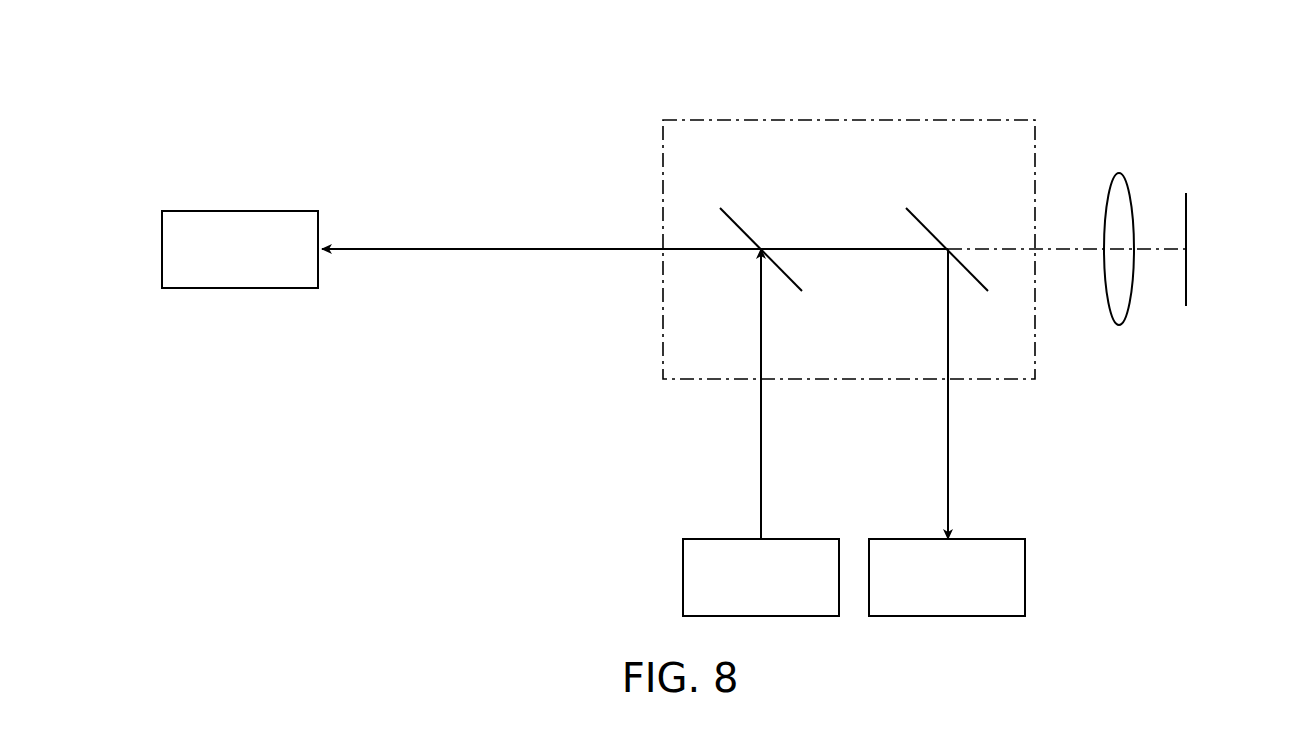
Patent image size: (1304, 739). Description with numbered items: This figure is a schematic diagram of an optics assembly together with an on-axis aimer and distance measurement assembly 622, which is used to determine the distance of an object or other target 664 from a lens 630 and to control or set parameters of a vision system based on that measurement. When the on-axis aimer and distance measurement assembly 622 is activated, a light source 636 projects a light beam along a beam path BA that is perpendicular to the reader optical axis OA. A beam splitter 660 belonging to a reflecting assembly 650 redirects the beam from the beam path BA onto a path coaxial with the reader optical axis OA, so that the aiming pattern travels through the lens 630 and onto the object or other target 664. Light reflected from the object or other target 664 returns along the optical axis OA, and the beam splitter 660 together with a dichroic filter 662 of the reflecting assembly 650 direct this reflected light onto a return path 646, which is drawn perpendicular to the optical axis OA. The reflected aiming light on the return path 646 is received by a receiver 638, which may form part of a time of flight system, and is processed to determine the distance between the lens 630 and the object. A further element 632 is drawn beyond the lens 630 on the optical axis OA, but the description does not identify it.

The on-axis aimer and distance measurement assembly 622 is at (470, 425).
The lens 630 is at (1133, 208).
The sensor plane 632 is at (1187, 218).
The light source 636 is at (722, 539).
The receiver 638 is at (985, 539).
The return path 646 is at (944, 319).
The reflecting assembly 650 is at (849, 120).
The beam splitter 660 is at (738, 229).
The dichroic filter 662 is at (928, 228).
The object or other target 664 is at (240, 211).
The reader optical axis OA is at (578, 248).
The beam path BA is at (761, 331).